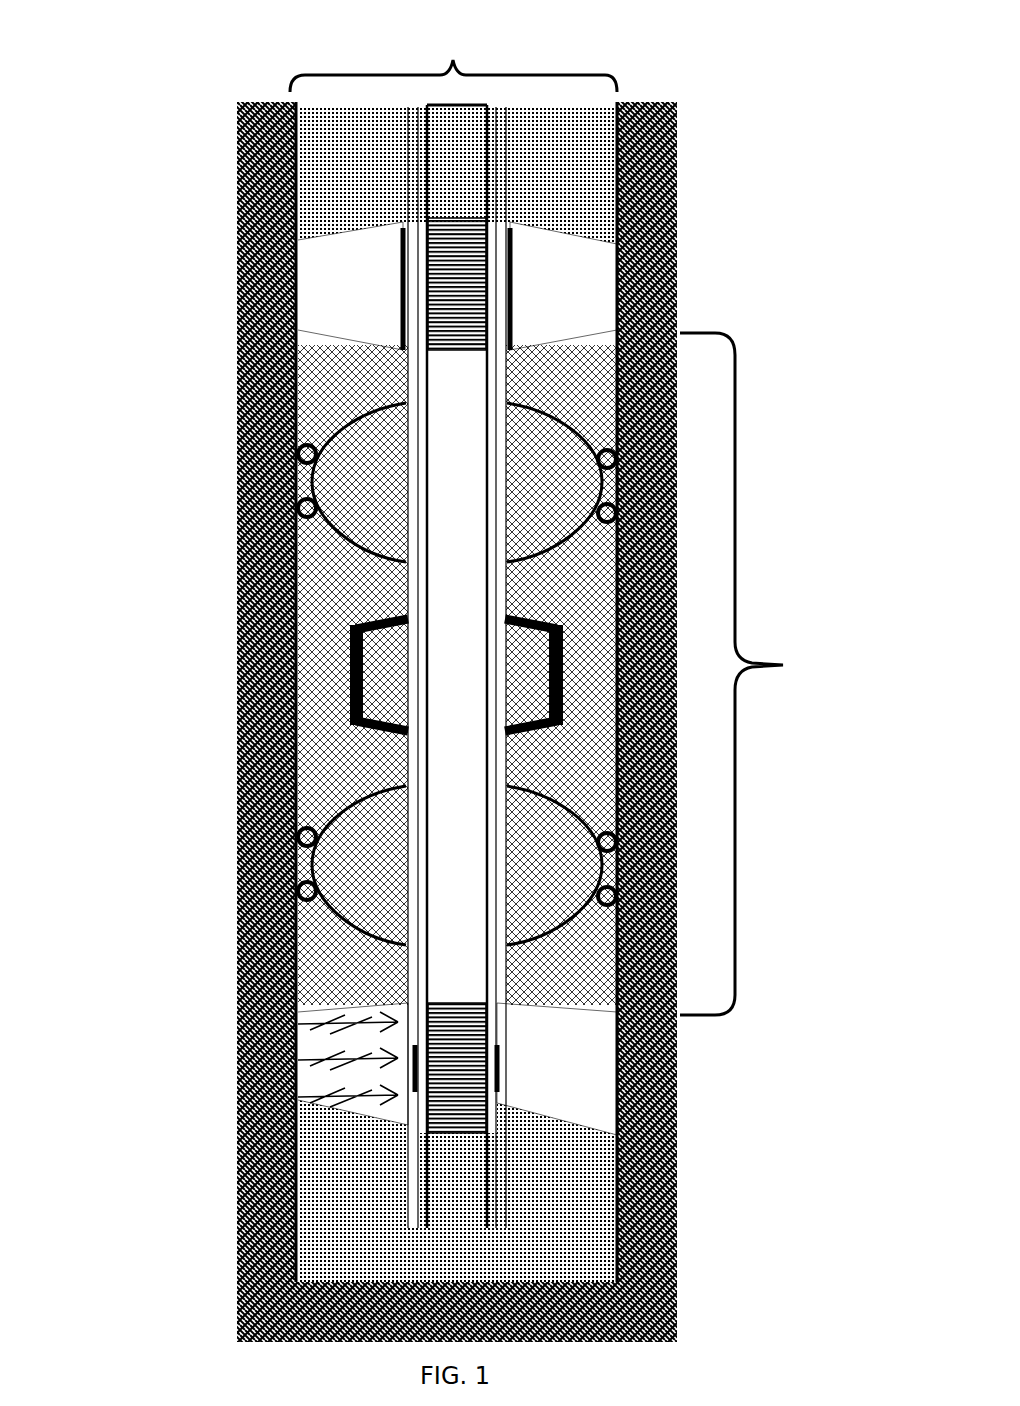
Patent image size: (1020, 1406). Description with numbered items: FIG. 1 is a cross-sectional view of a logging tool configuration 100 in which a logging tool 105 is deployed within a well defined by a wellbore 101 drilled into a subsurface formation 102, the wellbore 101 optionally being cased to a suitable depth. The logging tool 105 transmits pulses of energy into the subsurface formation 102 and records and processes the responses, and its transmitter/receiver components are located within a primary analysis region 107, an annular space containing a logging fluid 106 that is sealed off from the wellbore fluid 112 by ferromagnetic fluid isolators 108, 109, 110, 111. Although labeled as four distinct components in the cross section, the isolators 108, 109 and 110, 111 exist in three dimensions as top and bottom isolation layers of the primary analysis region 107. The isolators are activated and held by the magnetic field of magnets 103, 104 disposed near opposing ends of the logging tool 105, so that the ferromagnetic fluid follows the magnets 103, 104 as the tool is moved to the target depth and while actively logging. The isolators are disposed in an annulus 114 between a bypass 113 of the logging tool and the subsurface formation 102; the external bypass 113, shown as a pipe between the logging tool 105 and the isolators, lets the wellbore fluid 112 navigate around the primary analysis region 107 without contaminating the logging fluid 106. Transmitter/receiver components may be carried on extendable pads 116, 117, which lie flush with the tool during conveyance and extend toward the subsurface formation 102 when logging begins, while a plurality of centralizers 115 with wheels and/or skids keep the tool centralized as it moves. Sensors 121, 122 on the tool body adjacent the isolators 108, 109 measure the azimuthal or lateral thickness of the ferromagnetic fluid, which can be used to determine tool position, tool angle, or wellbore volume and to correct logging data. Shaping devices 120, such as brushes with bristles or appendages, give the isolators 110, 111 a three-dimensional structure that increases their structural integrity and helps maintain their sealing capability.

The logging tool configuration 100 is at (790, 57).
The wellbore 101 is at (453, 72).
The subsurface formation 102 is at (660, 142).
The magnet 103 is at (405, 188).
The magnet 104 is at (468, 1085).
The logging tool 105 is at (470, 140).
The logging fluid 106 is at (333, 393).
The primary analysis region 107 is at (756, 674).
The ferromagnetic fluid isolator 108 is at (330, 290).
The ferromagnetic fluid isolator 109 is at (563, 308).
The ferromagnetic fluid isolator 110 is at (322, 1110).
The ferromagnetic fluid isolator 111 is at (585, 1052).
The wellbore fluid 112 is at (575, 205).
The bypass 113 is at (488, 1230).
The annulus 114 is at (590, 135).
The centralizers 115 is at (337, 532).
The extendable pad 116 is at (352, 680).
The extendable pad 117 is at (562, 672).
The shaping devices 120 is at (322, 1030).
The sensor 121 is at (403, 240).
The sensor 122 is at (515, 255).